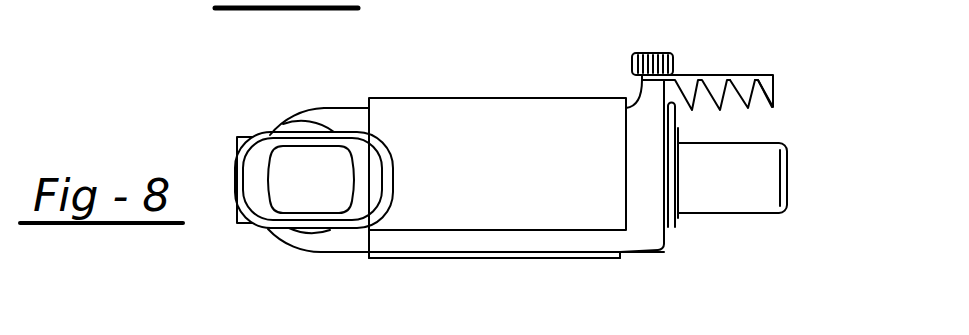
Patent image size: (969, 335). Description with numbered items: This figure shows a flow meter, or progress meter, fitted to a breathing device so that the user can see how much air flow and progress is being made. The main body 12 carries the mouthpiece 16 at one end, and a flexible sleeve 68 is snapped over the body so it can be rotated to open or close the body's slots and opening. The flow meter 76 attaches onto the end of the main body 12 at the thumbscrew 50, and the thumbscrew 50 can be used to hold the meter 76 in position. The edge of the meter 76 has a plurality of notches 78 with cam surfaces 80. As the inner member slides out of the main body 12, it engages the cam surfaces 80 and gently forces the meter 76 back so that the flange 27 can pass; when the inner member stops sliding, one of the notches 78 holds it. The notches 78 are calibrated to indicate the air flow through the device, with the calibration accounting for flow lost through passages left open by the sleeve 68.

The main body 12 is at (643, 223).
The mouthpiece 16 is at (258, 184).
The flange 27 is at (667, 247).
The thumbscrew 50 is at (653, 52).
The flexible sleeve 68 is at (467, 130).
The flow meter 76 is at (736, 73).
The notches 78 is at (735, 97).
The cam surfaces 80 is at (772, 108).